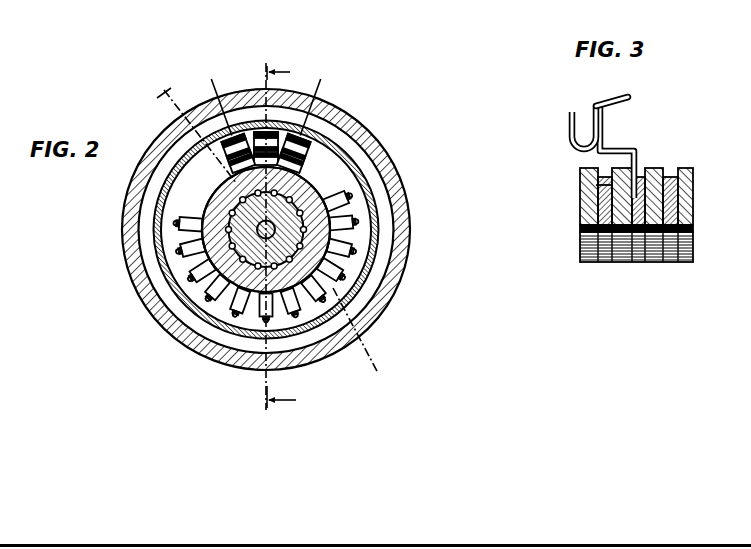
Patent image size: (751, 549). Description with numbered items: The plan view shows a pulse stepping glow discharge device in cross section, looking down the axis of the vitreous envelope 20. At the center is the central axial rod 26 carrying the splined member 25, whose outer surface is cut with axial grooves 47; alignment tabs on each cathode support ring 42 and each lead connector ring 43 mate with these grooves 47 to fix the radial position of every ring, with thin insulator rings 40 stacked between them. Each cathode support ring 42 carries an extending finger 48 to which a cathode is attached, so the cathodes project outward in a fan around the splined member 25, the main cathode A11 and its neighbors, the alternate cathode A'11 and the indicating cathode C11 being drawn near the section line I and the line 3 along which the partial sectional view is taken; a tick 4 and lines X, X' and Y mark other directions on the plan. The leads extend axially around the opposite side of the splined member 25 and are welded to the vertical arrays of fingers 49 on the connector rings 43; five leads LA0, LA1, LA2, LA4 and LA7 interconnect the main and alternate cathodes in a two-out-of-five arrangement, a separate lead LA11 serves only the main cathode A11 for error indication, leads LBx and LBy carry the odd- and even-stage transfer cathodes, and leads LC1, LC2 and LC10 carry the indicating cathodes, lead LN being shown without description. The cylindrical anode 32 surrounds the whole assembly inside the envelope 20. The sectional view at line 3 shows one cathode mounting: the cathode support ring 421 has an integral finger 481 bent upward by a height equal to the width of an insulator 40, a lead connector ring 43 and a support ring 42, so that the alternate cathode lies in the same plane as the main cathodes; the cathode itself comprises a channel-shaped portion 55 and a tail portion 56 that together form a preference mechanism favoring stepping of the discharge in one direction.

In FIG. 2, the vitreous envelope 20 is at (143, 266).
In FIG. 2, the anode 32 is at (340, 184).
In FIG. 2, the splined member 25 is at (306, 178).
In FIG. 2, the central axial rod 26 is at (326, 190).
In FIG. 2, the axial grooves 47 is at (284, 198).
In FIG. 2, the extending finger 48 is at (232, 172).
In FIG. 2, the fingers 49 is at (344, 278).
In FIG. 2, the line 3 is at (218, 86).
In FIG. 2, the radial tick 4 is at (320, 92).
In FIG. 2, the section line I- I is at (284, 236).
In FIG. 2, the line X is at (200, 134).
In FIG. 2, the line X' is at (159, 99).
In FIG. 2, the line Y is at (364, 336).
In FIG. 2, the main cathode A11 is at (258, 128).
In FIG. 2, the alternate cathode A'11 is at (220, 161).
In FIG. 3, the alternate cathode A'11 is at (553, 129).
In FIG. 2, the indicating cathode C11 is at (305, 128).
In FIG. 2, the lead LA11 is at (351, 195).
In FIG. 2, the lead LA7 is at (358, 221).
In FIG. 2, the lead LA4 is at (355, 252).
In FIG. 2, the lead LA2 is at (348, 284).
In FIG. 2, the lead LA1 is at (324, 301).
In FIG. 2, the lead LA0 is at (296, 316).
In FIG. 2, the lead LBx is at (266, 321).
In FIG. 2, the lead LBy is at (234, 316).
In FIG. 2, the coil LN is at (207, 300).
In FIG. 2, the lead LC2 is at (189, 280).
In FIG. 2, the lead LC1 is at (177, 252).
In FIG. 2, the lead LC10 is at (174, 223).
In FIG. 3, the thin insulator rings 40 is at (682, 217).
In FIG. 3, the cathode support rings 42 is at (594, 215).
In FIG. 3, the lead connector rings 43 is at (592, 200).
In FIG. 3, the cathode support ring 421 is at (596, 185).
In FIG. 3, the finger 481 is at (628, 149).
In FIG. 3, the channel-shaped portion 55 is at (585, 122).
In FIG. 3, the tail portion 56 is at (622, 99).